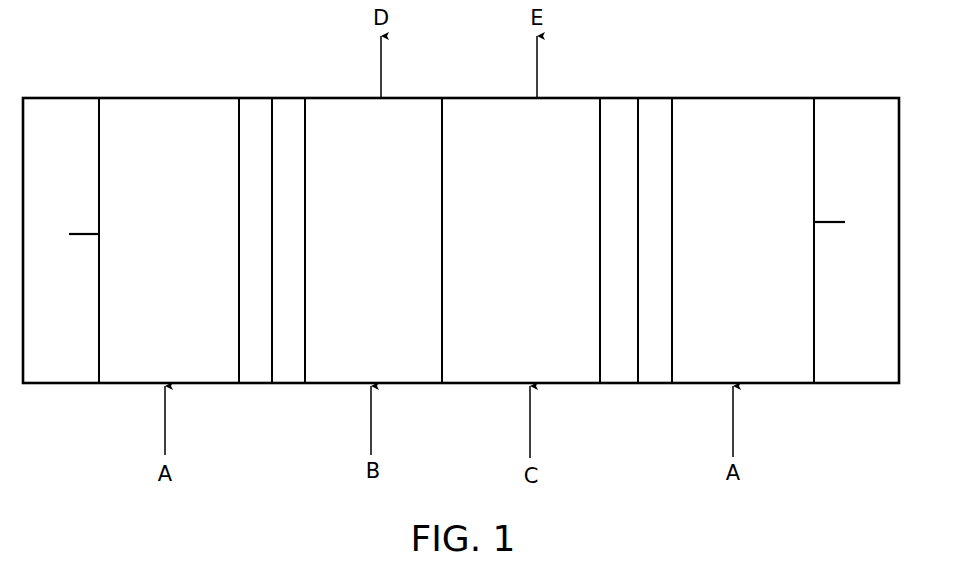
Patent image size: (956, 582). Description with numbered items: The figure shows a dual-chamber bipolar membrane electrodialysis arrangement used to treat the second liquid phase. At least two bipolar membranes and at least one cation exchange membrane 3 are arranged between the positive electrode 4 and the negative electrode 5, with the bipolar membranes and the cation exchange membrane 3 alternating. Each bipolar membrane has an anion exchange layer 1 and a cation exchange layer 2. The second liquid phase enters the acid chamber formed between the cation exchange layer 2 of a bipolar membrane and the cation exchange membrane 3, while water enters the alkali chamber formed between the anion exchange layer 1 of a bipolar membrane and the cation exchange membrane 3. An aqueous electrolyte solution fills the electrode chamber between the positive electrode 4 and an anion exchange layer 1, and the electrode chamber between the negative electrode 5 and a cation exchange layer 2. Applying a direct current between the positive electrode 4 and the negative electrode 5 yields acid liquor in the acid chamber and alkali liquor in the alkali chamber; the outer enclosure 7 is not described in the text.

The anion exchange layer of the bipolar membrane 1 is at (252, 193).
The cation exchange layer of the bipolar membrane 2 is at (292, 195).
The cation exchange membrane 3 is at (442, 160).
The positive electrode 4 is at (99, 182).
The negative electrode 5 is at (814, 195).
The electrodialysis cell housing 7 is at (726, 98).